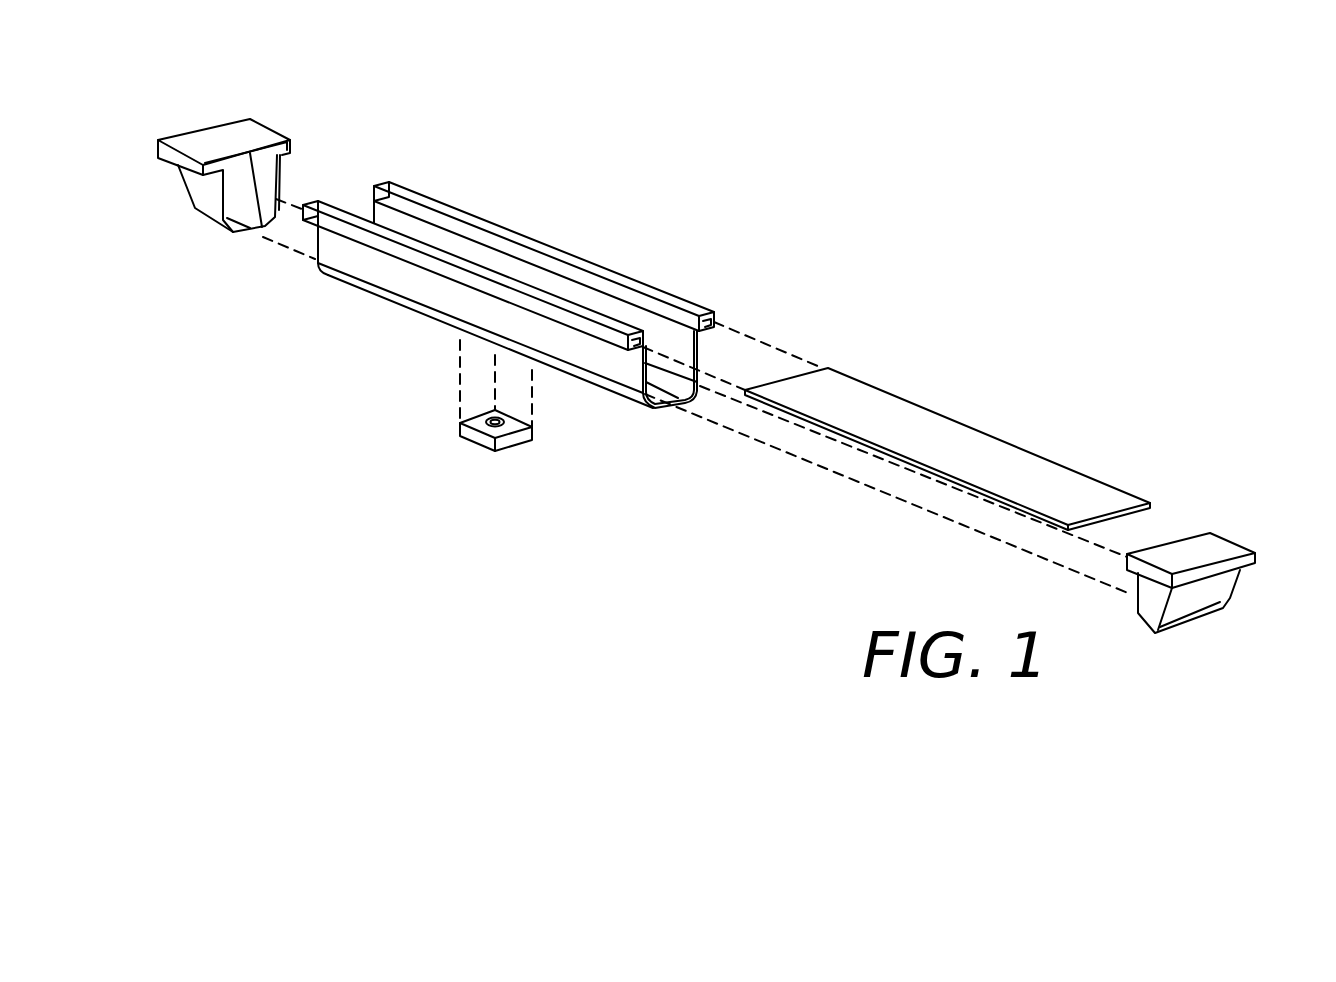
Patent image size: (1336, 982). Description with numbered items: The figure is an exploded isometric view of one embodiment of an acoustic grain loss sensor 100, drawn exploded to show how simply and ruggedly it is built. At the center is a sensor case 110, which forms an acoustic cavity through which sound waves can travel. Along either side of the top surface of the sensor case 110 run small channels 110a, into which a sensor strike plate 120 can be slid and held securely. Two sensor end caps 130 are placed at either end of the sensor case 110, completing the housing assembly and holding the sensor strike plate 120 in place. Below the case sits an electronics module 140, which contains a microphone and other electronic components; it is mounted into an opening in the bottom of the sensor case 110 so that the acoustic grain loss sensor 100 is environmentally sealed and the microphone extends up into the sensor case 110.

The acoustic grain loss sensor 100 is at (324, 354).
The sensor case 110 is at (452, 208).
The channels 110a is at (713, 322).
The sensor strike plate 120 is at (900, 410).
The sensor end caps 130 is at (217, 138).
The electronics module 140 is at (472, 433).